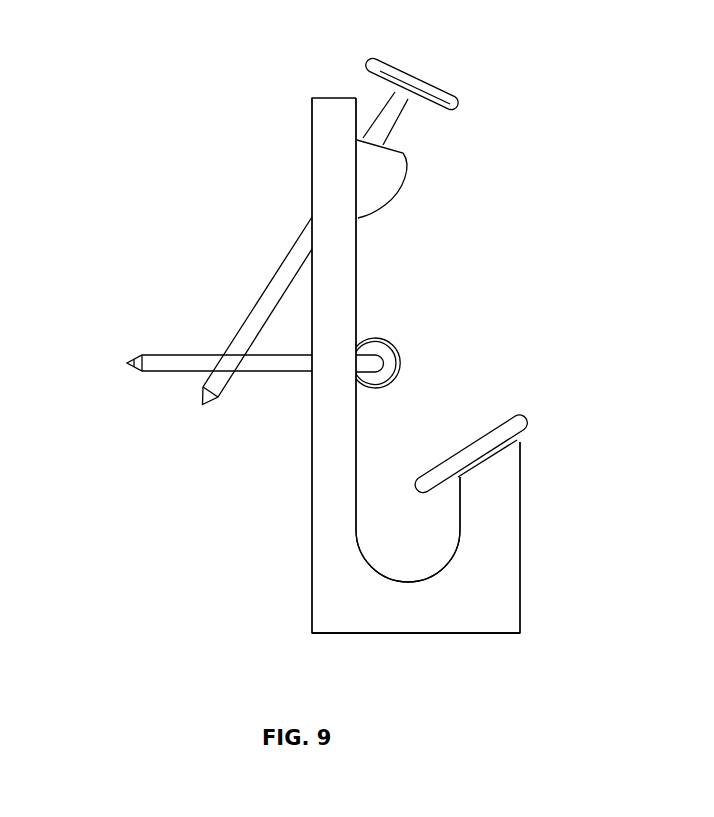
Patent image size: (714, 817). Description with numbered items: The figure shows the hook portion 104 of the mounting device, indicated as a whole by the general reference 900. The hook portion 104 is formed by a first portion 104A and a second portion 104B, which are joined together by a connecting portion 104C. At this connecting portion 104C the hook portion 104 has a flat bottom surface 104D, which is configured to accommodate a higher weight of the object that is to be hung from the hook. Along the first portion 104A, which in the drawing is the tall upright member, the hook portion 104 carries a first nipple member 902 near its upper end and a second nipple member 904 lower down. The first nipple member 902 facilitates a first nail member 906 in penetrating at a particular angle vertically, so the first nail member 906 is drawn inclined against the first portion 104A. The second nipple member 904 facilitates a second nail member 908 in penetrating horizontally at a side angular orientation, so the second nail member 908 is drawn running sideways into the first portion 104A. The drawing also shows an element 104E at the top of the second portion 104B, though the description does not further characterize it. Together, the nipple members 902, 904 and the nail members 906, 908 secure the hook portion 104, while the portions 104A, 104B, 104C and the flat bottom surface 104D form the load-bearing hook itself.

The tool holder assembly 900 is at (218, 69).
The first nipple member 902 is at (388, 175).
The second nipple member 904 is at (402, 365).
The first nail member 906 is at (267, 283).
The second nail member 908 is at (126, 362).
The hook portion 104 is at (323, 507).
The first portion 104A is at (330, 528).
The second portion 104B is at (485, 543).
The portion connecting the first portion and the second portion 104C is at (418, 617).
The flat bottom surface 104D is at (378, 633).
The roller 104E is at (476, 443).